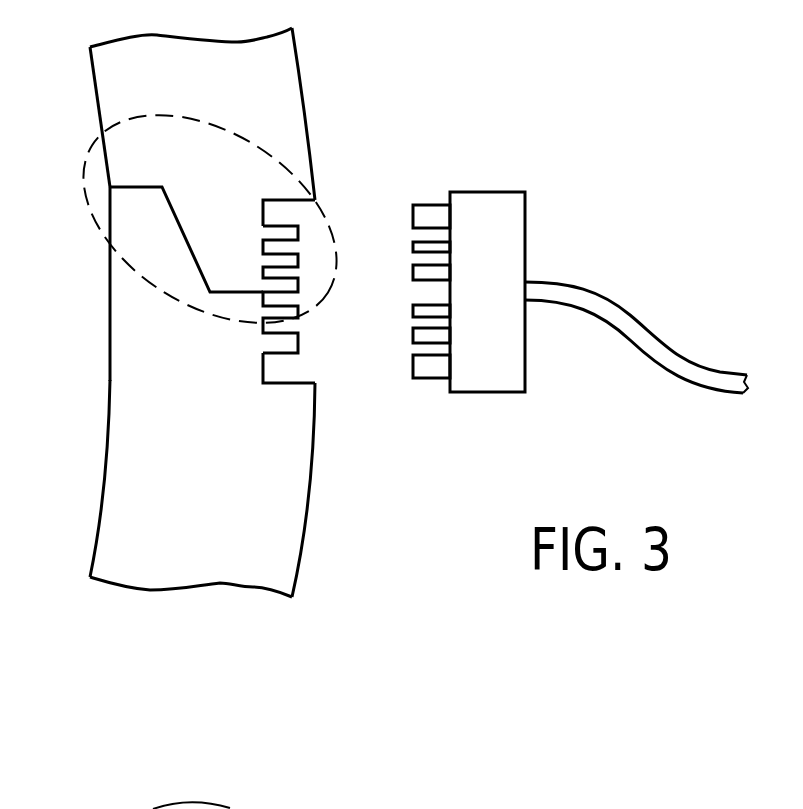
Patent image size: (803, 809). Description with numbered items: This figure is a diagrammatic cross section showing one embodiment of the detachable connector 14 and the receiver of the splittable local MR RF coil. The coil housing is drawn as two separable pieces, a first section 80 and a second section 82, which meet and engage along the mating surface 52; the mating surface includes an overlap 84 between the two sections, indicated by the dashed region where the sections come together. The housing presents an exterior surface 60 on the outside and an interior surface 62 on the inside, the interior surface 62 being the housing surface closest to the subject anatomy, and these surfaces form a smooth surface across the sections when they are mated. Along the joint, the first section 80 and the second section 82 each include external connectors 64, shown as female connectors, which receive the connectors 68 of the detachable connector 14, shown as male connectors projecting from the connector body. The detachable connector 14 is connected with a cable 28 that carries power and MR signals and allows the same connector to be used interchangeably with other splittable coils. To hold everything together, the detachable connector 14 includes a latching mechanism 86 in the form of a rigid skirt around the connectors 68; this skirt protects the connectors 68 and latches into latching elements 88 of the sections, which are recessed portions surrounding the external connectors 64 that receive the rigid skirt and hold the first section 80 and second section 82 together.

The detachable connector 14 is at (546, 252).
The cable 28 is at (636, 315).
The mating surface 52 is at (215, 296).
The exterior surface 60 is at (214, 312).
The interior surface 62 is at (103, 382).
The external connectors 64 is at (263, 235).
The connectors 68 is at (413, 247).
The first section 80 is at (282, 102).
The second section 82 is at (280, 515).
The overlap 84 is at (87, 180).
The latching mechanism 86 is at (413, 215).
The latching elements 88 is at (263, 215).